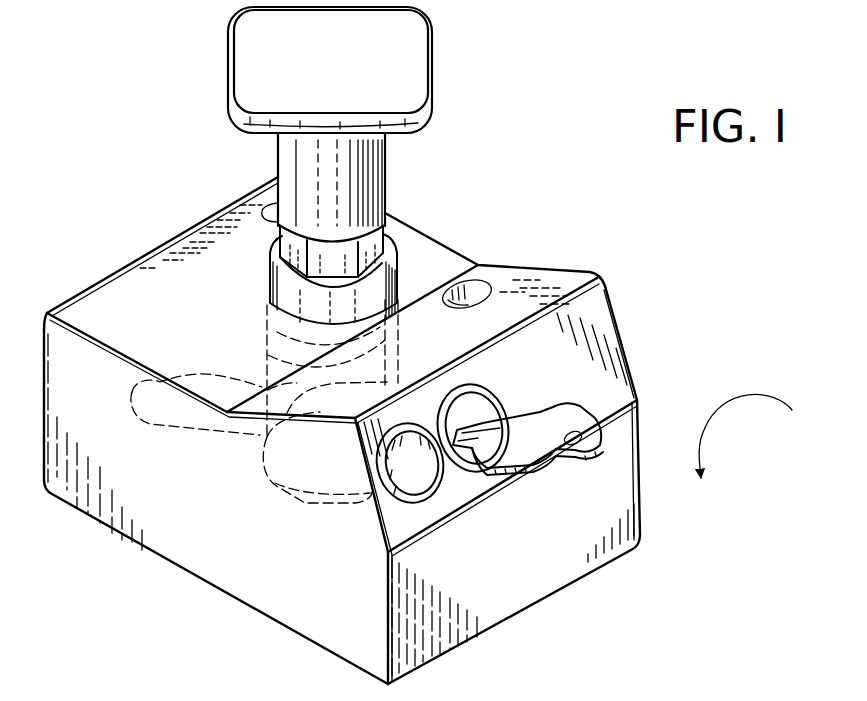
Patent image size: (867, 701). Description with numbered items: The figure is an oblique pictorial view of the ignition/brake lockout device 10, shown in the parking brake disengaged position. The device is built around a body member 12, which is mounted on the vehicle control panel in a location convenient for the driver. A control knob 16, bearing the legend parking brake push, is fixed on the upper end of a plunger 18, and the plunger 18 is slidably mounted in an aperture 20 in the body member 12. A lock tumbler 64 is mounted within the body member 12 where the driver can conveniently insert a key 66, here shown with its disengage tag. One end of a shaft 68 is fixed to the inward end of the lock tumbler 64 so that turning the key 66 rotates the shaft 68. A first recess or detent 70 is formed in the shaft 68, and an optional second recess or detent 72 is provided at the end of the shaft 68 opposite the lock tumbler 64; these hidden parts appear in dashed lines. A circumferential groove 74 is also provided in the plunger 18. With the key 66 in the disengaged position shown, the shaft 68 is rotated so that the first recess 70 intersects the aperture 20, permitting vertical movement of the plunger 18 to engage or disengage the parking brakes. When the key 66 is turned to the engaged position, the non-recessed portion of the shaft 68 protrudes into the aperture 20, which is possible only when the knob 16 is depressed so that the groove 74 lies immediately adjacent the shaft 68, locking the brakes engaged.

The ignition/brake lockout device 10 is at (417, 354).
The body member 12 is at (125, 262).
The control knob 16 is at (232, 63).
The plunger 18 is at (400, 250).
The aperture 20 is at (270, 283).
The lock tumbler 64 is at (450, 462).
The key 66 is at (597, 405).
The shaft 68 is at (202, 430).
The first recess or detent 70 is at (261, 383).
The second recess or detent 72 is at (132, 392).
The circumferential groove 74 is at (372, 367).